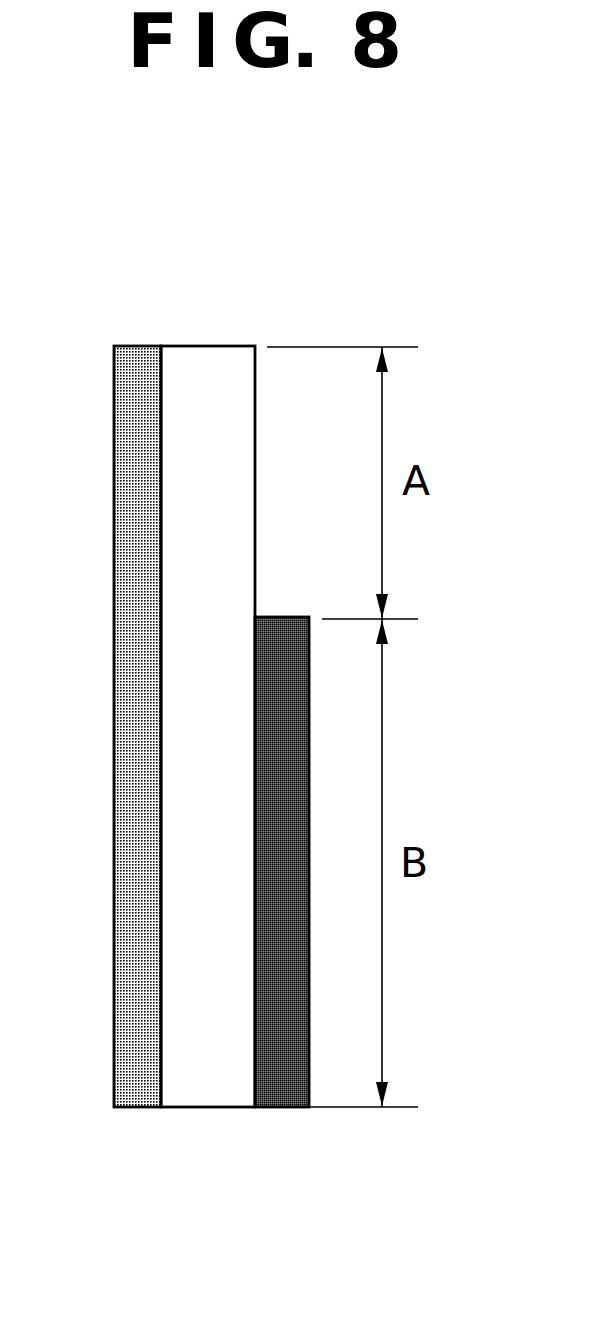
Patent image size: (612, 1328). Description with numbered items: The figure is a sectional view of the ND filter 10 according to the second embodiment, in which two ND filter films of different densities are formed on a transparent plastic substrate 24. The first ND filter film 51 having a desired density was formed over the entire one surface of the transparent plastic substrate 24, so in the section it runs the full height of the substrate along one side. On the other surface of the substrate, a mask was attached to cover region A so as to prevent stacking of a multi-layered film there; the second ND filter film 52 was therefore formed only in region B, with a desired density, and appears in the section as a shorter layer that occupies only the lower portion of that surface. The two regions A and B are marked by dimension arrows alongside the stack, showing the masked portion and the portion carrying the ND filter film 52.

The ND filter 10 is at (168, 738).
The ND filter film 51 is at (139, 1082).
The transparent plastic substrate 24 is at (207, 1082).
The ND filter film 52 is at (280, 1080).